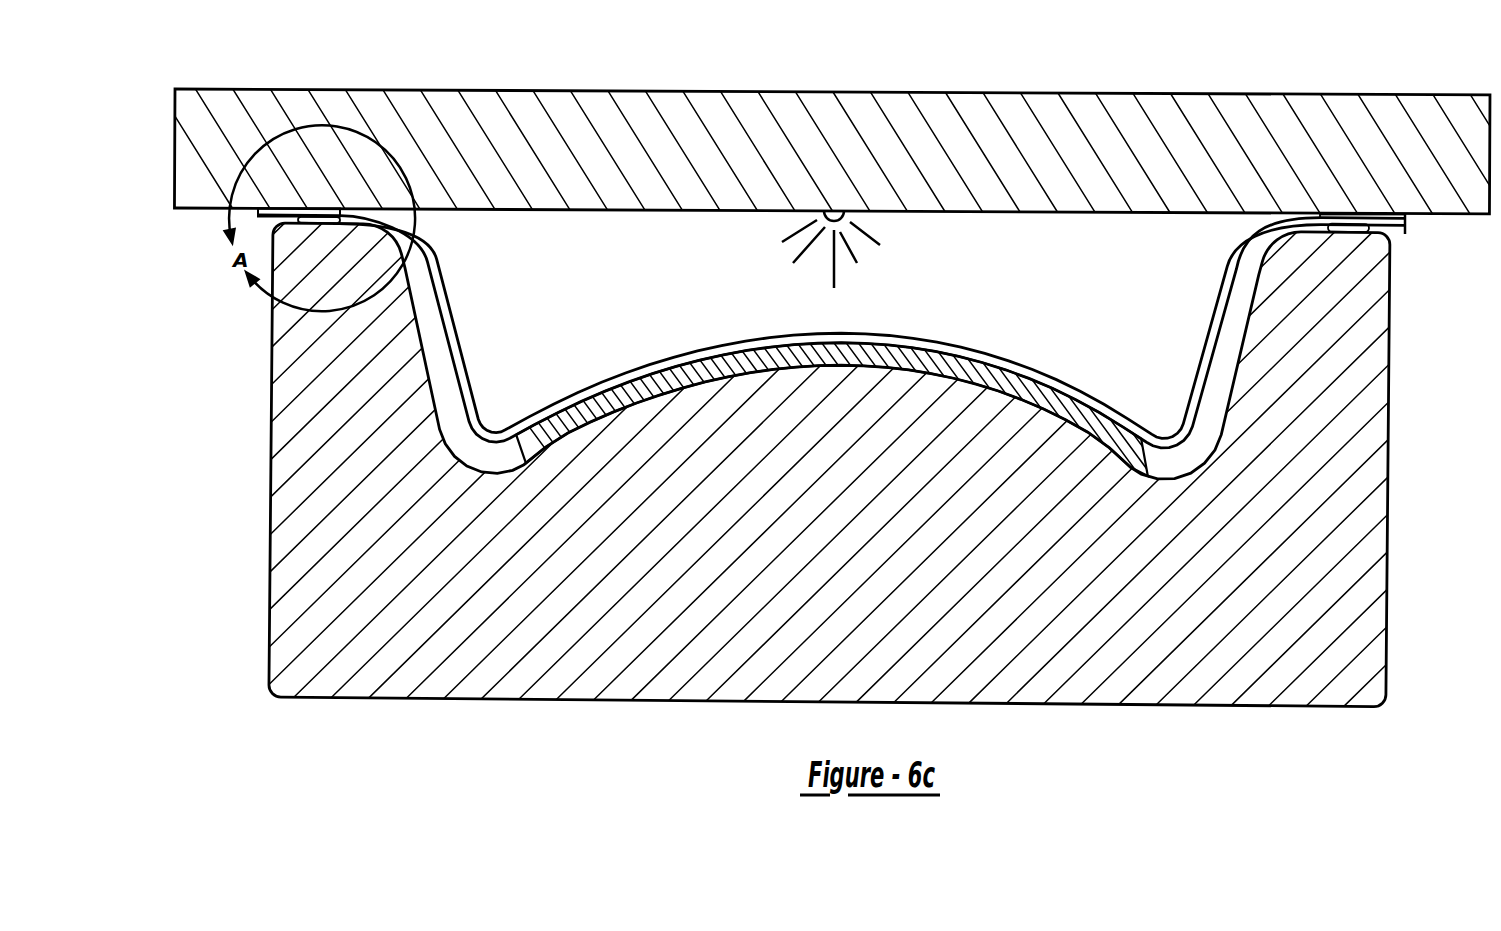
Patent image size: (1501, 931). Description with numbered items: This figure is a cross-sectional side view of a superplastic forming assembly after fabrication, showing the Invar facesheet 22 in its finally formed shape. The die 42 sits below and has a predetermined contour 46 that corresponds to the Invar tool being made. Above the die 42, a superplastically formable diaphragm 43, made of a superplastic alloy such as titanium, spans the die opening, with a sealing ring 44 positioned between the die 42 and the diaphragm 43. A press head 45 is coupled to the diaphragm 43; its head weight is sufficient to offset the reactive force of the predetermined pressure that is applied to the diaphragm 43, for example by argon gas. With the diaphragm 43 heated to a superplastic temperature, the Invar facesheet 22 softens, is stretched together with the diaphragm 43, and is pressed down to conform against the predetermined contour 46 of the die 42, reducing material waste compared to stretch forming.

The press head 45 is at (815, 112).
The die 42 is at (1367, 452).
The Invar facesheet 22 is at (536, 464).
The predetermined contour 46 is at (640, 405).
The superplastically formable diaphragm 43 is at (1405, 226).
The sealing ring 44 is at (1406, 236).